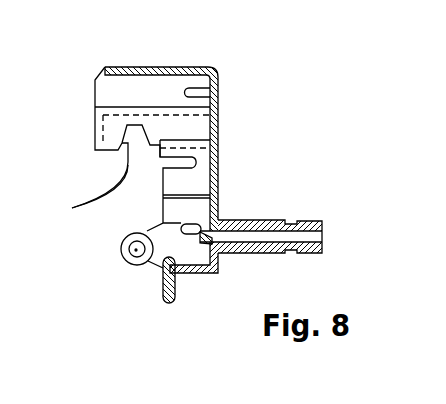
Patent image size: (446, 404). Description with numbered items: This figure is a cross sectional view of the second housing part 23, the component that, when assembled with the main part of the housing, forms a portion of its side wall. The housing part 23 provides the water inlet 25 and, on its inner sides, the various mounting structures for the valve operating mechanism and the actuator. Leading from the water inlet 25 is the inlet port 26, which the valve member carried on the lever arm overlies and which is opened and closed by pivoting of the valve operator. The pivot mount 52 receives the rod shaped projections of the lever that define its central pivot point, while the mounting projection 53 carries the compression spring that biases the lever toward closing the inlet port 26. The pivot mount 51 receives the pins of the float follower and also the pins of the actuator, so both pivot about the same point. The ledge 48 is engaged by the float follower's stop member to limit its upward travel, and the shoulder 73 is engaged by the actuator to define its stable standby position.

The second housing part 23 is at (150, 66).
The mounting projection 53 is at (193, 90).
The pivot mount 52 is at (197, 153).
The water inlet 25 is at (306, 220).
The inlet port 26 is at (206, 238).
The shoulder 73 is at (84, 193).
The pivot mount 51 is at (136, 250).
The ledge 48 is at (160, 270).